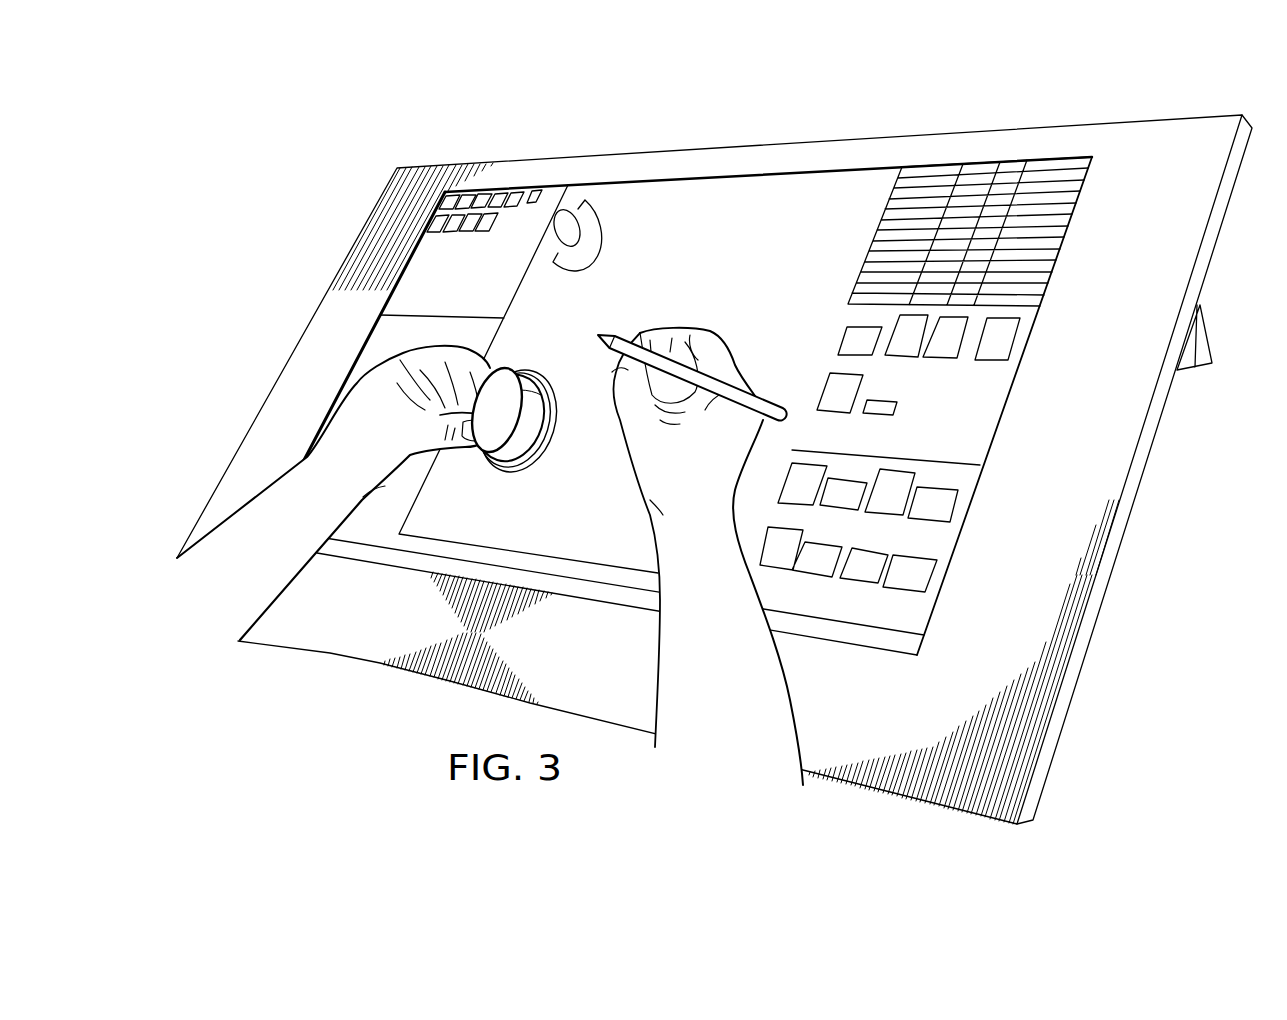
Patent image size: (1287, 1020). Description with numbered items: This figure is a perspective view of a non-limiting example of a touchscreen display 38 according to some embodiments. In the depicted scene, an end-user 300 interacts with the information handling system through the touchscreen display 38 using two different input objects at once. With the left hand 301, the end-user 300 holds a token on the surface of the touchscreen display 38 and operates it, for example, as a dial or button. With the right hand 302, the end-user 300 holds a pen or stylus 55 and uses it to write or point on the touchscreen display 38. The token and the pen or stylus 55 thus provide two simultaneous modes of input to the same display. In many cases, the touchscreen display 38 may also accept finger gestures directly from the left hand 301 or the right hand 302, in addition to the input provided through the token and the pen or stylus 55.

The end-user 300 is at (714, 447).
The touchscreen display 38 is at (786, 144).
The pen or stylus 55 is at (728, 403).
The left hand 301 is at (352, 405).
The right hand 302 is at (692, 328).